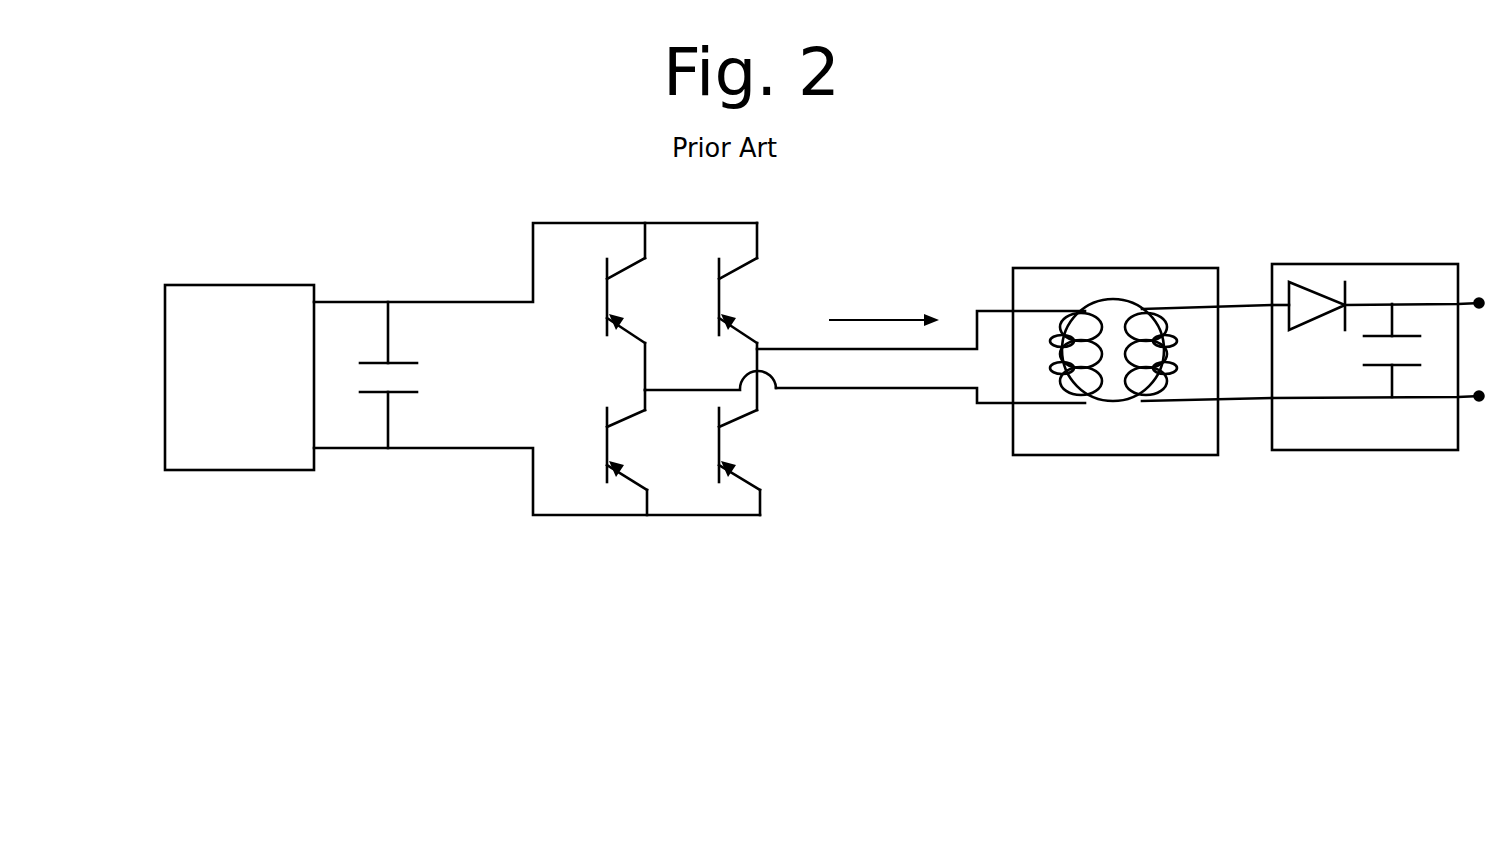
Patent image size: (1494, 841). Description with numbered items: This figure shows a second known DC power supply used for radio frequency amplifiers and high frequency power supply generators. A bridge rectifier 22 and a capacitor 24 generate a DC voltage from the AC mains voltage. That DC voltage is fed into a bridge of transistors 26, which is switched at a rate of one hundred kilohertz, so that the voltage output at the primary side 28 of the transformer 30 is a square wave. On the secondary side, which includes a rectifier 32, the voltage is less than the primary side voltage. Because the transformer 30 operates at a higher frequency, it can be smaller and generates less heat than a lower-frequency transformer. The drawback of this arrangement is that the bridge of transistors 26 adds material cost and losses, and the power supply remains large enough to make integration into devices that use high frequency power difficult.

The bridge rectifier 22 is at (239, 377).
The capacitor 24 is at (418, 375).
The bridge of transistors 26 is at (691, 396).
The primary side 28 is at (884, 294).
The transformer 30 is at (1115, 386).
The rectifier 32 is at (1378, 389).